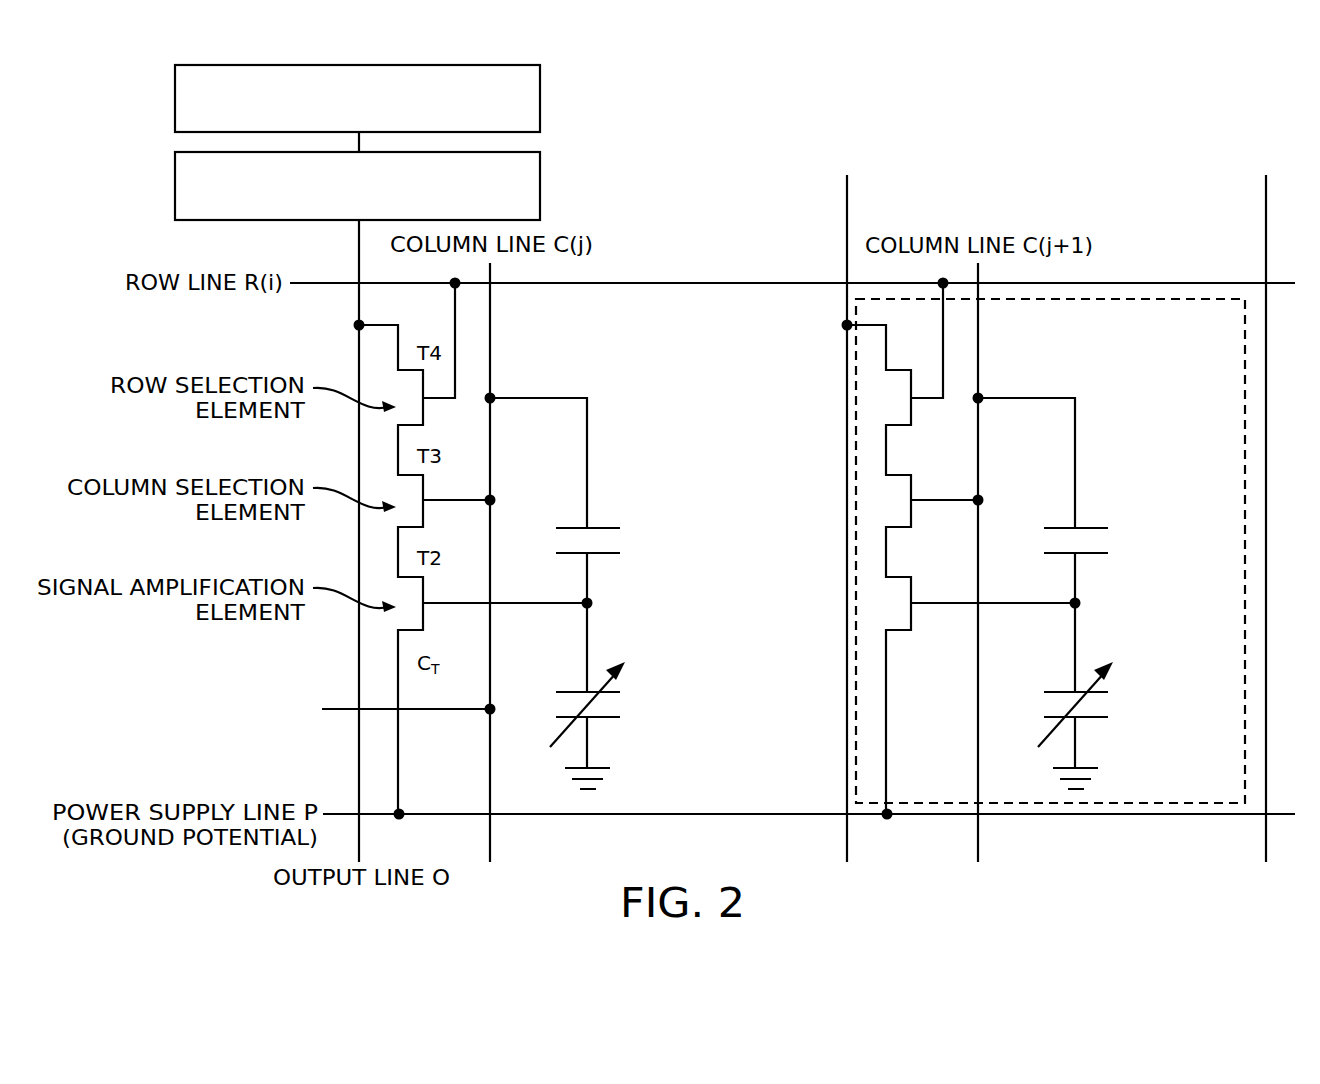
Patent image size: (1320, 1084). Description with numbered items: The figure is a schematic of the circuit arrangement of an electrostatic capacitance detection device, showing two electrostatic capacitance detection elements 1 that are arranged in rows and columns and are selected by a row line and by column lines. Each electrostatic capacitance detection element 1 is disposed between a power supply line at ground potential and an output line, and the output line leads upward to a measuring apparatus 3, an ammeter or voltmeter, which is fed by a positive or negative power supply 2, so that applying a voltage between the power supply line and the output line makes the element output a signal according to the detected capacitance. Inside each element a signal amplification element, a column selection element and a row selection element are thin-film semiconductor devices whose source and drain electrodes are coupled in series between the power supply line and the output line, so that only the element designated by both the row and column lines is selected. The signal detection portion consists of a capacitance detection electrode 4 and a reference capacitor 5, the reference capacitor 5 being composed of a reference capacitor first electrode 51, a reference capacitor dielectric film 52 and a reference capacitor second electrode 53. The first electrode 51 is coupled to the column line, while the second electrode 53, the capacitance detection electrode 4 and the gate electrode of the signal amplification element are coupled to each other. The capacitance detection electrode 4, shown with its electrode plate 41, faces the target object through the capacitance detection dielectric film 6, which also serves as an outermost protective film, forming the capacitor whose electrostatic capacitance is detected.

The electrostatic capacitance detection element 1 is at (1124, 283).
The positive or negative power supply 2 is at (540, 88).
The measuring apparatus (ammeter or voltmeter) 3 is at (540, 178).
The capacitance detection electrode 4 is at (853, 683).
The reference capacitor 5 is at (855, 551).
The capacitance detection dielectric film 6 is at (612, 712).
The detection electrode plate 41 is at (612, 690).
The reference capacitor first electrode 51 is at (610, 527).
The reference capacitor dielectric film 52 is at (610, 541).
The reference capacitor second electrode 53 is at (610, 553).